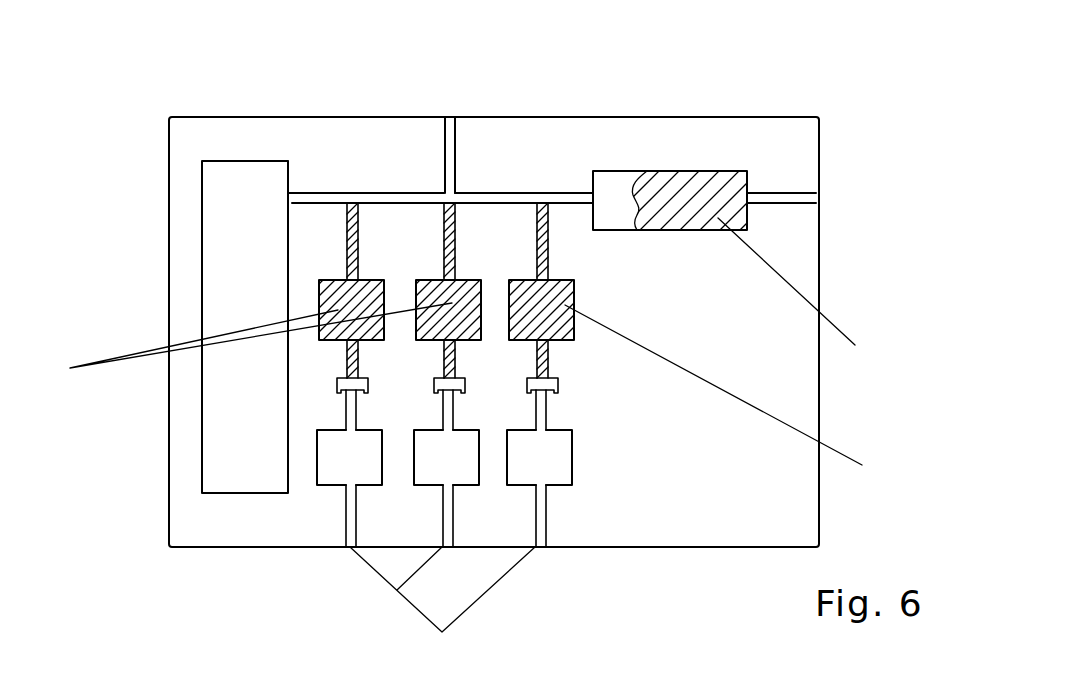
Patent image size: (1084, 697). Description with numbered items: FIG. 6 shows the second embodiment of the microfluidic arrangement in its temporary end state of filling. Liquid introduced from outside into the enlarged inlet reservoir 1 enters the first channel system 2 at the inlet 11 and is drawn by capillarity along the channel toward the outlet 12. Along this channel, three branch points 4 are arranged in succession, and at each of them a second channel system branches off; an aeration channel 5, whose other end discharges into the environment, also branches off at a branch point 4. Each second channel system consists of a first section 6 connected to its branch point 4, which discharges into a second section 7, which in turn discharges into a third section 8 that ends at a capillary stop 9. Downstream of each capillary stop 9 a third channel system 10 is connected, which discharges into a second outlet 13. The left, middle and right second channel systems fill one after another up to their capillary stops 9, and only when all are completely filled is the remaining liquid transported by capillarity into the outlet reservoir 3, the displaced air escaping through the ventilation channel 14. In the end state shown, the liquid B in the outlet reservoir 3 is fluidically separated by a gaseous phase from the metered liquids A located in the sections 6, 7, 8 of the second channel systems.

The inlet reservoir 1 is at (218, 328).
The first channel system 2 is at (512, 192).
The outlet reservoir 3 is at (630, 180).
The branch point 4 is at (352, 190).
The aeration channel 5 is at (455, 192).
The first section of the second channel system 6 is at (440, 225).
The second section of the second channel system 7 is at (380, 335).
The third section of the second channel system 8 is at (358, 365).
The capillary stop 9 is at (340, 390).
The third channel system 10 is at (365, 472).
The inlet 11 is at (291, 189).
The outlet 12 is at (624, 183).
The second outlet 13 is at (442, 607).
The ventilation channel 14 is at (807, 195).
The metered liquids A is at (459, 393).
The liquid in the outlet reservoir B is at (799, 291).